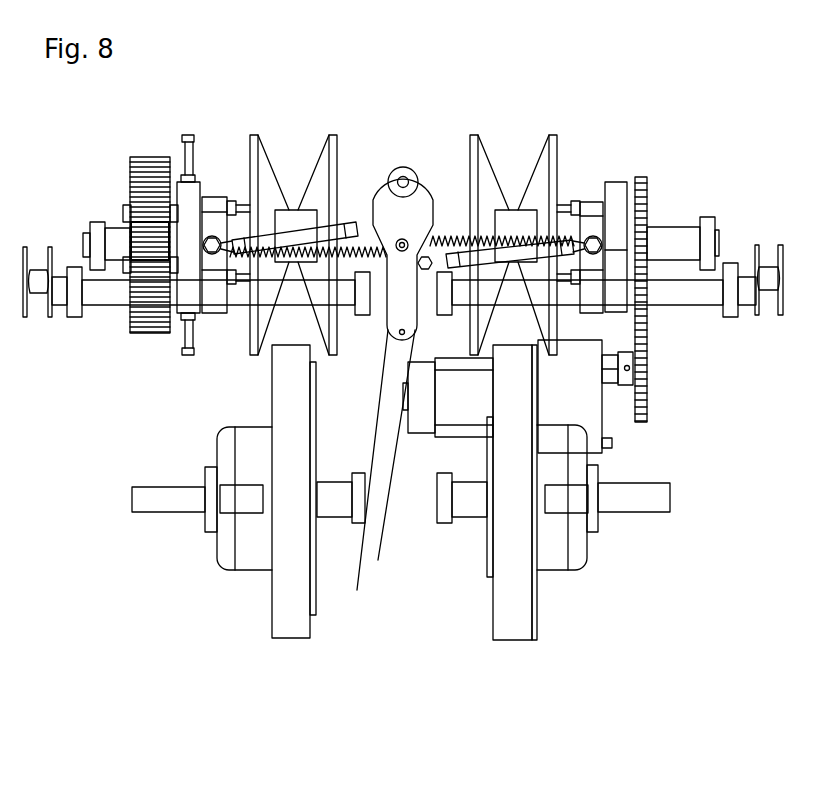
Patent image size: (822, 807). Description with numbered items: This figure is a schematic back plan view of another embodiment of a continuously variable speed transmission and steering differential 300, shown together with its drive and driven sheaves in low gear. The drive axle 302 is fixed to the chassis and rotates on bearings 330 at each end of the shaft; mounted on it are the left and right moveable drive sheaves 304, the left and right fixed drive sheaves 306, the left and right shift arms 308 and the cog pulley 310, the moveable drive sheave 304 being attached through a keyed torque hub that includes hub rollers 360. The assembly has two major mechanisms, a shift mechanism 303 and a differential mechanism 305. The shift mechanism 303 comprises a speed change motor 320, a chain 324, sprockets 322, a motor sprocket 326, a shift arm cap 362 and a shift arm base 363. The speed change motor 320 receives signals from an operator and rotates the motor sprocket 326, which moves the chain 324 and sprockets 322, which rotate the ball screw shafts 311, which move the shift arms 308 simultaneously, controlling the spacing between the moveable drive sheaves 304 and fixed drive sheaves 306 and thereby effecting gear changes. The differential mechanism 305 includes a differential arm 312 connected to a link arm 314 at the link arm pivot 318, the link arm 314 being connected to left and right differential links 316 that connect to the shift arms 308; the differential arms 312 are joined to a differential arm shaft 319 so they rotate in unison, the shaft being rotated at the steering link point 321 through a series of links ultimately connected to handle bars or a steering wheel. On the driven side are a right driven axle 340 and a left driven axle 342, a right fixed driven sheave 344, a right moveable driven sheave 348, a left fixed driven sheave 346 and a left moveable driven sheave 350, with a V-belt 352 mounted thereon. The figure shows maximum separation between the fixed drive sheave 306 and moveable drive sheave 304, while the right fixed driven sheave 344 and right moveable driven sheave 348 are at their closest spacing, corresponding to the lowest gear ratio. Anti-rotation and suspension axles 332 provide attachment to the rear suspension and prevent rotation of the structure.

The continuously variable speed transmission and steering differential 300 is at (411, 64).
The drive axle 302 is at (110, 237).
The shift mechanism 303 is at (583, 703).
The moveable drive sheave 304 is at (254, 135).
The differential mechanism 305 is at (141, 698).
The fixed drive sheave 306 is at (330, 135).
The shift arm 308 is at (212, 200).
The cog pulley 310 is at (140, 160).
The ball screw shaft 311 is at (478, 238).
The differential arm 312 is at (430, 165).
The link arm 314 is at (437, 215).
The differential link 316 is at (205, 258).
The link arm pivot 318 is at (393, 168).
The differential arm shaft 319 is at (398, 175).
The speed change motor 320 is at (445, 430).
The steering link point 321 is at (378, 560).
The sprocket 322 is at (642, 178).
The chain 324 is at (658, 196).
The motor sprocket 326 is at (642, 418).
The bearing 330 is at (712, 222).
The anti-rotation and suspension axle 332 is at (257, 300).
The right driven axle 340 is at (647, 500).
The left driven axle 342 is at (145, 505).
The right fixed driven sheave 344 is at (590, 593).
The left fixed driven sheave 346 is at (270, 618).
The right moveable driven sheave 348 is at (490, 650).
The left moveable driven sheave 350 is at (312, 615).
The V-belt 352 is at (285, 640).
The hub roller 360 is at (615, 215).
The shift arm cap 362 is at (182, 180).
The shift arm base 363 is at (160, 340).